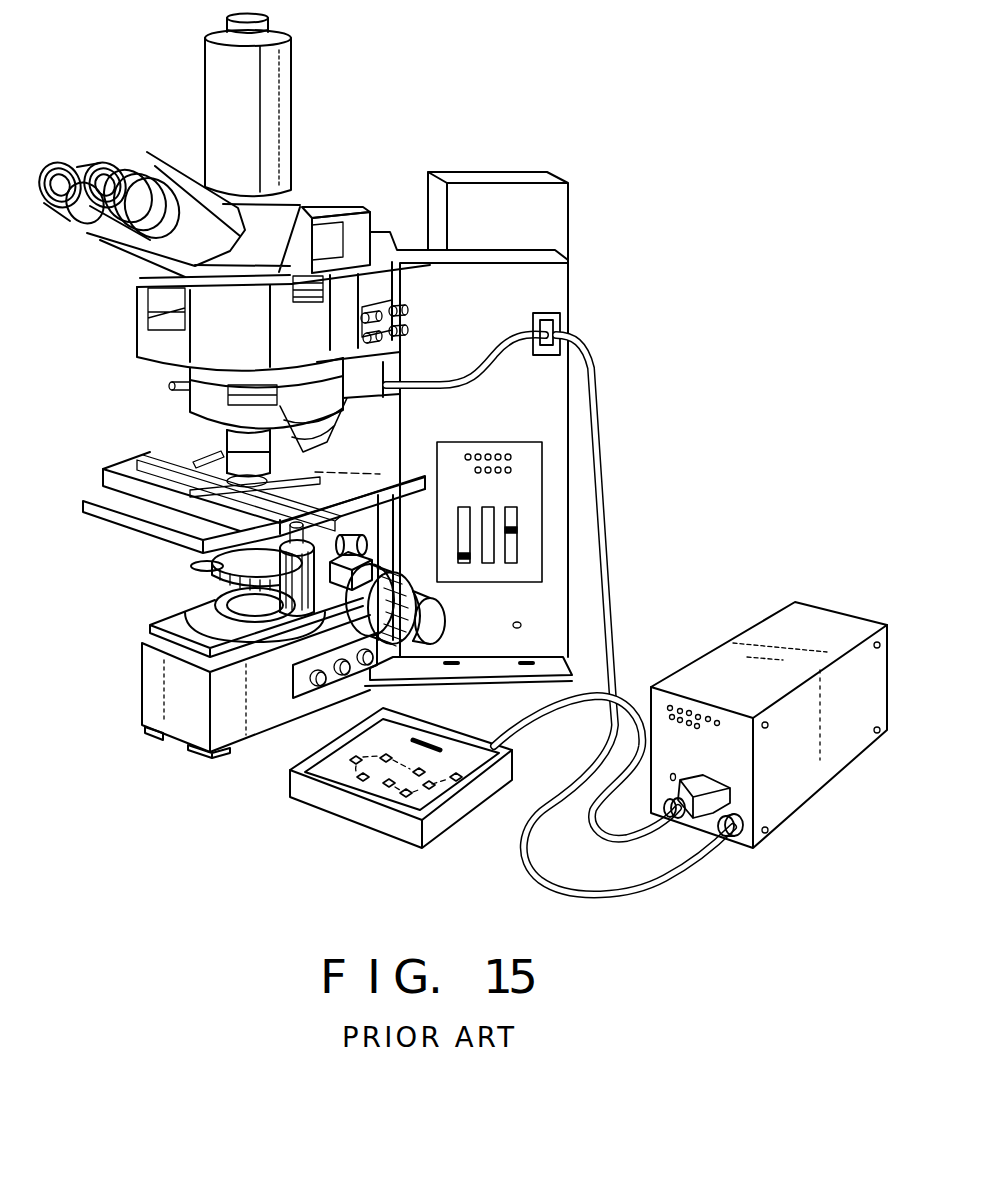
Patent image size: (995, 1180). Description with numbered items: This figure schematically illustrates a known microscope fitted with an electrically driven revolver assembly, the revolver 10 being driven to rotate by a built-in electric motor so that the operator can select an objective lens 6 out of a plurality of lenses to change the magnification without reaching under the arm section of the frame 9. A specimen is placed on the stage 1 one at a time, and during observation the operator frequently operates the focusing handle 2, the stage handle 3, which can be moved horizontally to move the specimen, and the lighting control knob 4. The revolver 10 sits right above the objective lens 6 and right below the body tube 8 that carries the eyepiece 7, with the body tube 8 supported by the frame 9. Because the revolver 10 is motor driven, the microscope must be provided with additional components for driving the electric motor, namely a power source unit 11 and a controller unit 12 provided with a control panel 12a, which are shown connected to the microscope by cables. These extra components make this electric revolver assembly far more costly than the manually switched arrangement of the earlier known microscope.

The stage 1 is at (392, 478).
The focusing handle 2 is at (437, 617).
The stage handle 3 is at (220, 598).
The lighting control knob 4 is at (510, 533).
The objective lens 6 is at (243, 440).
The eyepiece 7 is at (110, 178).
The body tube 8 is at (330, 210).
The frame 9 is at (520, 393).
The revolver 10 is at (217, 393).
The power source unit 11 is at (833, 753).
The controller unit 12 is at (374, 795).
The control panel 12a is at (390, 772).